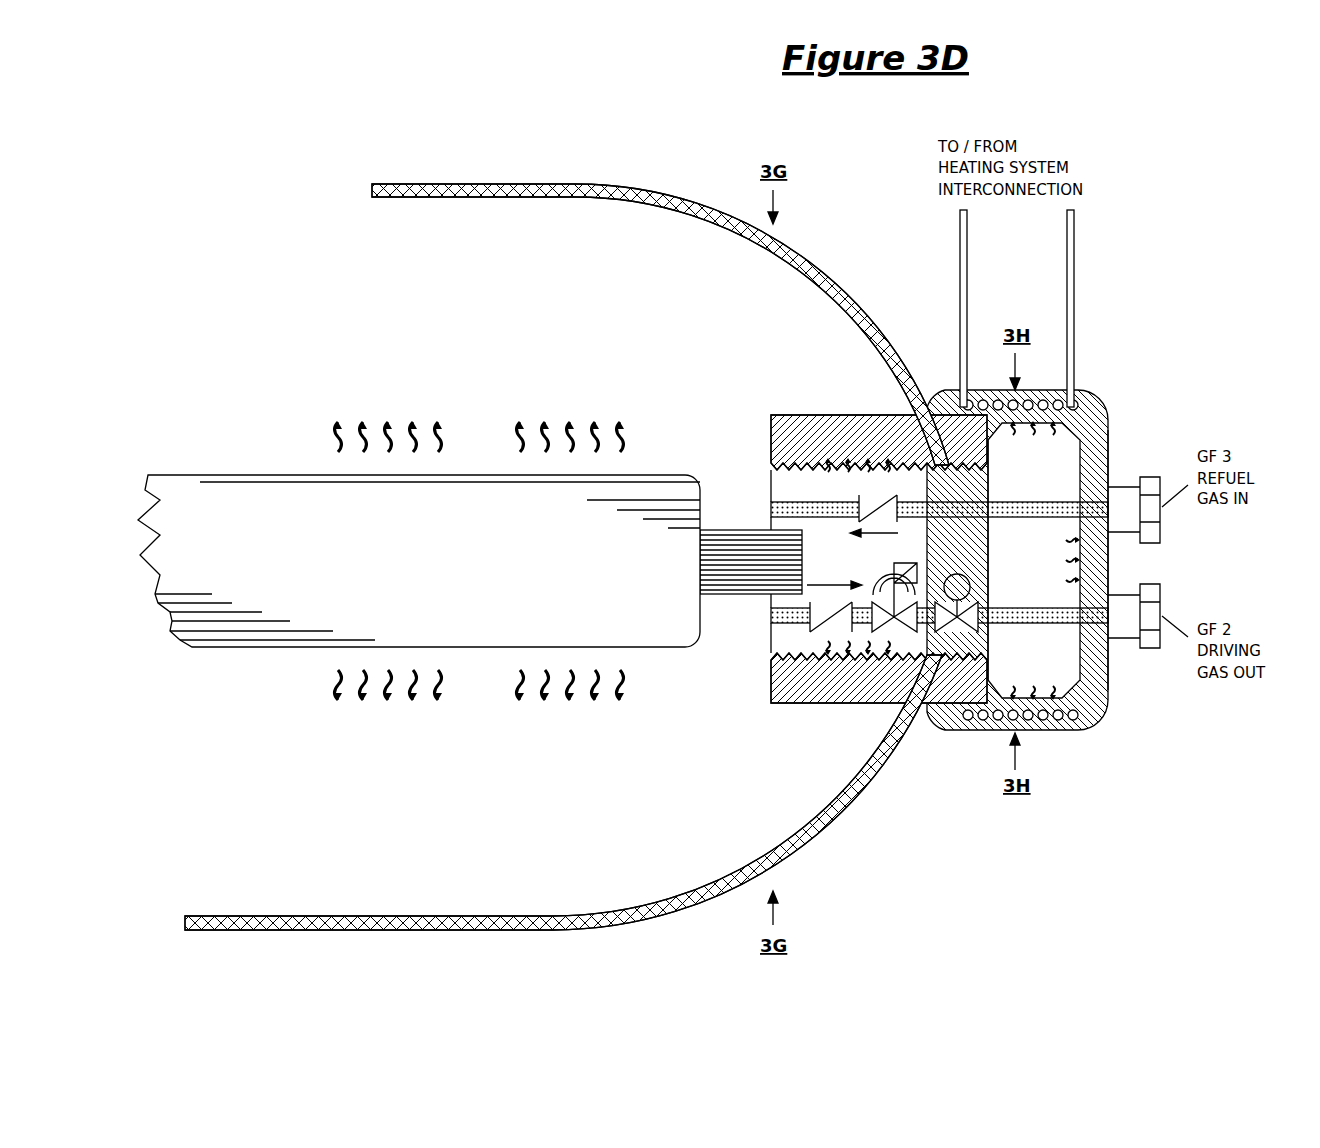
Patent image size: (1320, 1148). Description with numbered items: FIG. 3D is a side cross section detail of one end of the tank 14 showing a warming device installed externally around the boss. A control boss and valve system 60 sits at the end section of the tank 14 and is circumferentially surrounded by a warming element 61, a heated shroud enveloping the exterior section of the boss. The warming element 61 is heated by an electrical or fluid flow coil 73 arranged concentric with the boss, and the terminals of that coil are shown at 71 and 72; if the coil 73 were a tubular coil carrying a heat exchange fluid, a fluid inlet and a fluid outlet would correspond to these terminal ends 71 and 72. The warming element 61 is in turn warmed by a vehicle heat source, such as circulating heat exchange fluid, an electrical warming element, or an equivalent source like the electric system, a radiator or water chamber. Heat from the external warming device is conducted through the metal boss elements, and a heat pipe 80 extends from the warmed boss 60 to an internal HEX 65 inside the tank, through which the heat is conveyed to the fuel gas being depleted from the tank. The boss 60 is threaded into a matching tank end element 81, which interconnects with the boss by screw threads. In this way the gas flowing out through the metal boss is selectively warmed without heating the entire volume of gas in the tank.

The tank 14 is at (610, 190).
The control boss and valve system 60 is at (1107, 695).
The warming element 61 is at (1108, 440).
The internal HEX 65 is at (250, 482).
The power terminal 71 is at (1073, 277).
The power terminal 72 is at (960, 283).
The electrical or fluid flow coil 73 is at (1072, 405).
The heat pipe 80 is at (750, 552).
The tank end element 81 is at (838, 430).